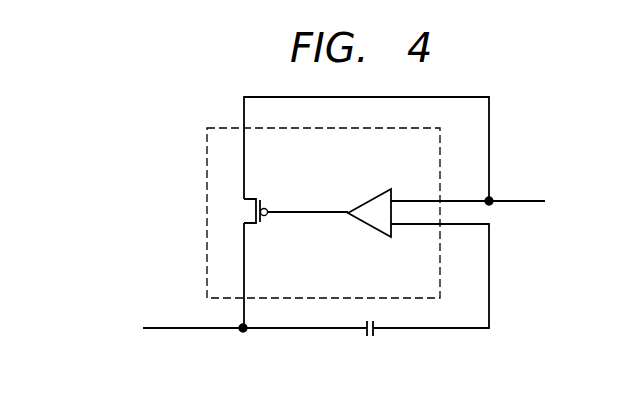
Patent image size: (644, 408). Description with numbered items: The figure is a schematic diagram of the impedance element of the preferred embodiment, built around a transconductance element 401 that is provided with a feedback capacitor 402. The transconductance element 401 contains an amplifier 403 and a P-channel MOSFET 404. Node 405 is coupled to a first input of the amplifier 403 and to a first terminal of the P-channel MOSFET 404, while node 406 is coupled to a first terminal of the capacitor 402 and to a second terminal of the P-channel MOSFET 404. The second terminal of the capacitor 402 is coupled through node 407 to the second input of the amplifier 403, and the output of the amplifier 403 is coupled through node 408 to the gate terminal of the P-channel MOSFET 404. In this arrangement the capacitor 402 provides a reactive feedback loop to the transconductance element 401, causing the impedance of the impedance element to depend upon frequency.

The transconductance element 401 is at (207, 158).
The feedback capacitor 402 is at (374, 335).
The amplifier 403 is at (373, 228).
The P-channel MOSFET 404 is at (250, 228).
The node 405 is at (523, 200).
The node 406 is at (190, 328).
The node 407 is at (489, 285).
The node 408 is at (317, 212).